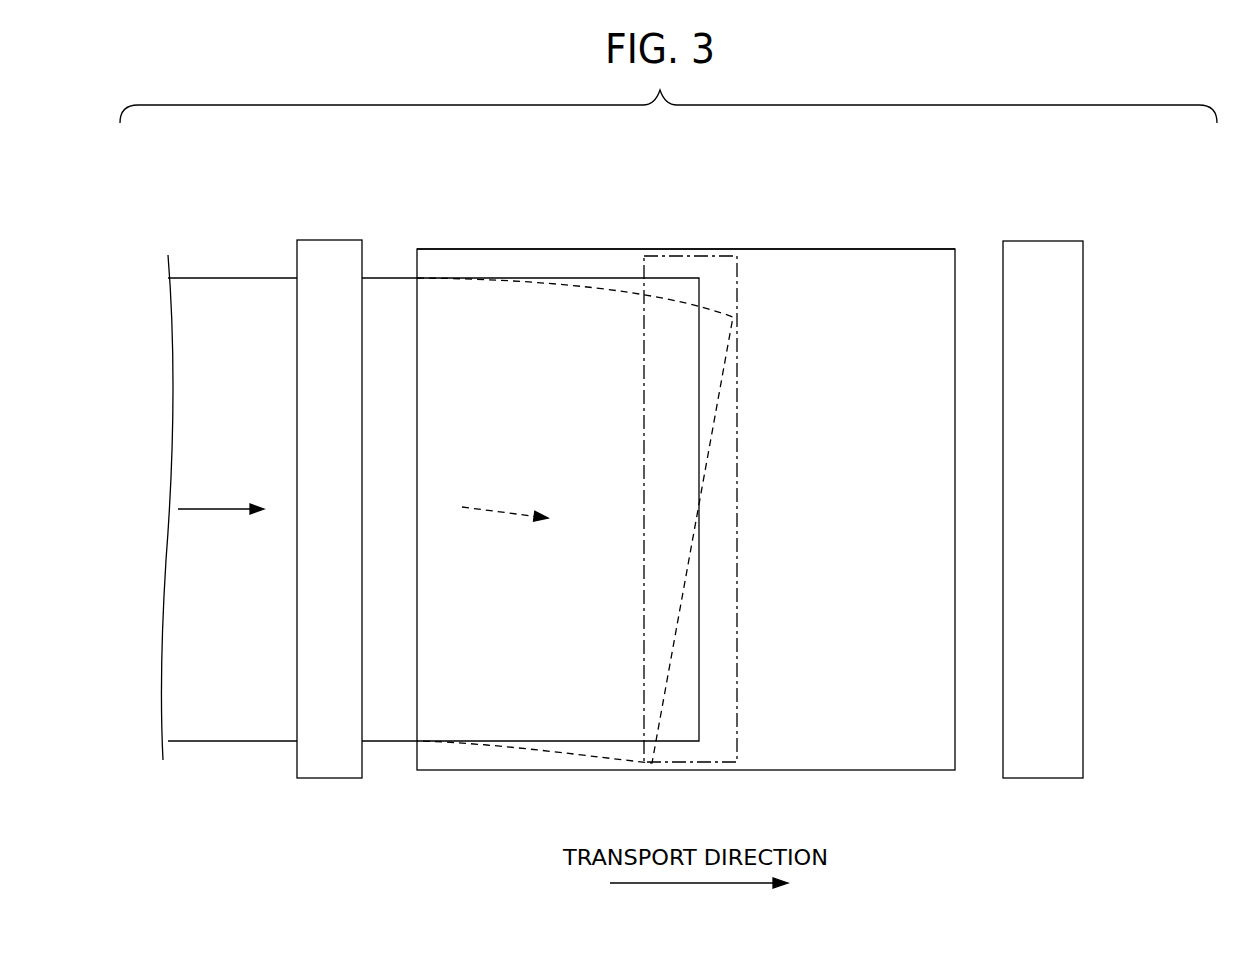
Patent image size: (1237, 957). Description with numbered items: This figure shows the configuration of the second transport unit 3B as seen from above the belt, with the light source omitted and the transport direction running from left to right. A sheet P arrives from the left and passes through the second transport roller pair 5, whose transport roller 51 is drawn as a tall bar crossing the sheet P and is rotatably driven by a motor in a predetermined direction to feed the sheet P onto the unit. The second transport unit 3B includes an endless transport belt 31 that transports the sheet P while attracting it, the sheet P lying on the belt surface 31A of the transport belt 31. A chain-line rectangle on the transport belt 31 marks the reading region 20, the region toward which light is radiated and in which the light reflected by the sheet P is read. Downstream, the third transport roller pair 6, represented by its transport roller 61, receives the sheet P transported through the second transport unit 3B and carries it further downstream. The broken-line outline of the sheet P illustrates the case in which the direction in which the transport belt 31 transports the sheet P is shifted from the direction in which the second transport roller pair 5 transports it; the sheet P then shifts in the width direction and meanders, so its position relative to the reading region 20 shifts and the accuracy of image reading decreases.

The sheet P is at (393, 278).
The second transport roller pair 5 is at (288, 501).
The transport roller 51 is at (326, 768).
The second transport unit 3B is at (712, 445).
The transport belt 31 is at (792, 250).
The outer peripheral surface of the transport belt 31A is at (850, 262).
The reading region 20 is at (710, 255).
The third transport roller pair 6 is at (1096, 517).
The transport roller 61 is at (1045, 767).